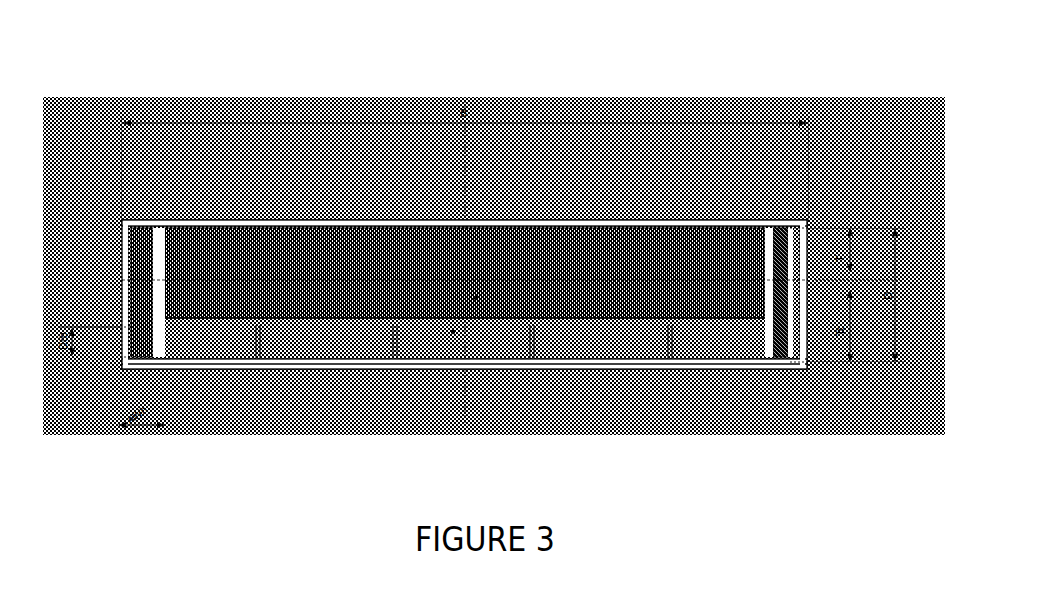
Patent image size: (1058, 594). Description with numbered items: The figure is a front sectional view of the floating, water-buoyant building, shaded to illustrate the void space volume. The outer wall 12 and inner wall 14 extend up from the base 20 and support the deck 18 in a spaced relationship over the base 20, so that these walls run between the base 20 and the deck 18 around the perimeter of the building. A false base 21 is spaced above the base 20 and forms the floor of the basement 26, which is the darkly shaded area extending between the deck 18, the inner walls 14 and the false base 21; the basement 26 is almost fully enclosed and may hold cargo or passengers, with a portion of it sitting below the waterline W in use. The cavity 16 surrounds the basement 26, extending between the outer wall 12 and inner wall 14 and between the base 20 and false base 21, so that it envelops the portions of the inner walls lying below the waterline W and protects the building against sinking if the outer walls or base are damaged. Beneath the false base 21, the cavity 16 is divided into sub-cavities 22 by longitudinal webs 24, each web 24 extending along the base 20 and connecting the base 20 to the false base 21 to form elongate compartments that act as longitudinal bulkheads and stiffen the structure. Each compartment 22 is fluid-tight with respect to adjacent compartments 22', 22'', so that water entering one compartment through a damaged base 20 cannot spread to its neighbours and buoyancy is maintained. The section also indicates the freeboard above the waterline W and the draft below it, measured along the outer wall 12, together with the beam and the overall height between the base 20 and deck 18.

The outer wall 12 is at (122, 258).
The inner wall 14 is at (157, 258).
The cavity 16 is at (178, 345).
The deck 18 is at (334, 217).
The base 20 is at (733, 370).
The false base 21 is at (285, 316).
The sub-cavity 22 is at (465, 432).
The adjacent compartment 22' is at (332, 415).
The adjacent compartment 22'' is at (453, 415).
The longitudinal web 24 is at (670, 335).
The basement 26 is at (563, 257).
The waterline W is at (817, 280).